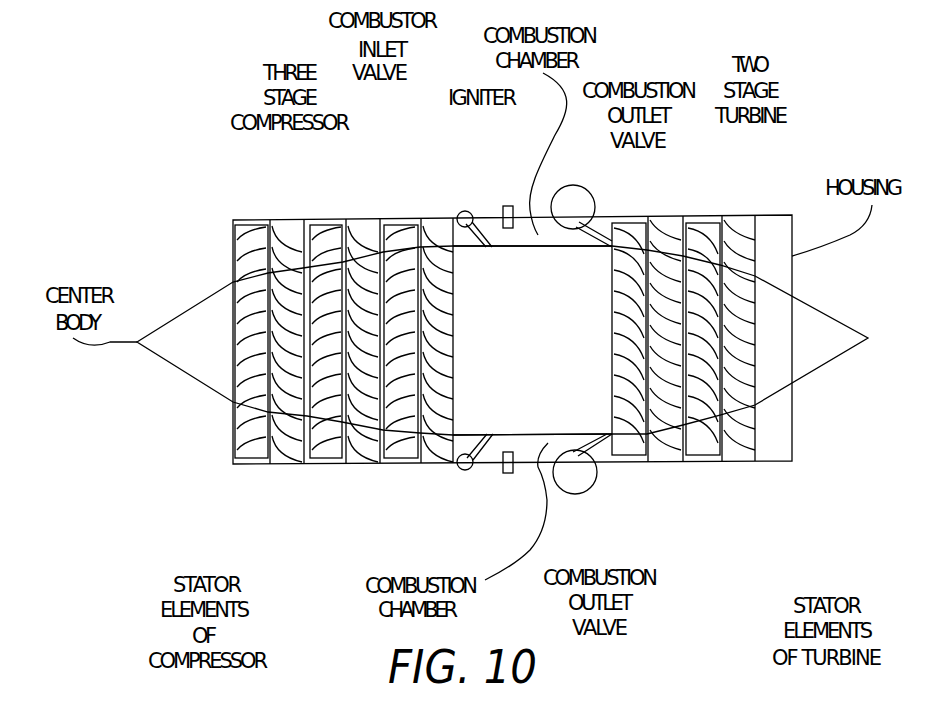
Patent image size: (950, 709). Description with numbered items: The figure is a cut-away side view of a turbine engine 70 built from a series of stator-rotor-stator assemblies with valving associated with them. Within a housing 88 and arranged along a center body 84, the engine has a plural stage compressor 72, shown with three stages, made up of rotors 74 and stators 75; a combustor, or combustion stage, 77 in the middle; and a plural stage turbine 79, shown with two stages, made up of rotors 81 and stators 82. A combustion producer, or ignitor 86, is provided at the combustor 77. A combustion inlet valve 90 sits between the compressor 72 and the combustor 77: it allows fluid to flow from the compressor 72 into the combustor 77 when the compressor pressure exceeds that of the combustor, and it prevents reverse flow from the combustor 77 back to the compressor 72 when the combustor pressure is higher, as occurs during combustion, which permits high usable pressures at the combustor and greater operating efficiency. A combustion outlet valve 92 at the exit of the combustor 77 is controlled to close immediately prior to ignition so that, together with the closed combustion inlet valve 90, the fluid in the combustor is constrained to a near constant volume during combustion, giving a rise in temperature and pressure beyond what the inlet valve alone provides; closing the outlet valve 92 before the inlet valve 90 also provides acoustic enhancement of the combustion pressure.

The turbine engine 70 is at (193, 102).
The stage compressor 72 is at (398, 223).
The rotors 74 is at (243, 437).
The stators 75 is at (437, 457).
The combustor 77 is at (540, 377).
The turbine 79 is at (630, 222).
The rotors 81 is at (635, 445).
The stators 82 is at (670, 462).
The center body 84 is at (202, 297).
The ignitor 86 is at (504, 207).
The housing 88 is at (430, 217).
The combustion inlet valve 90 is at (480, 216).
The combustion outlet valve 92 is at (590, 200).